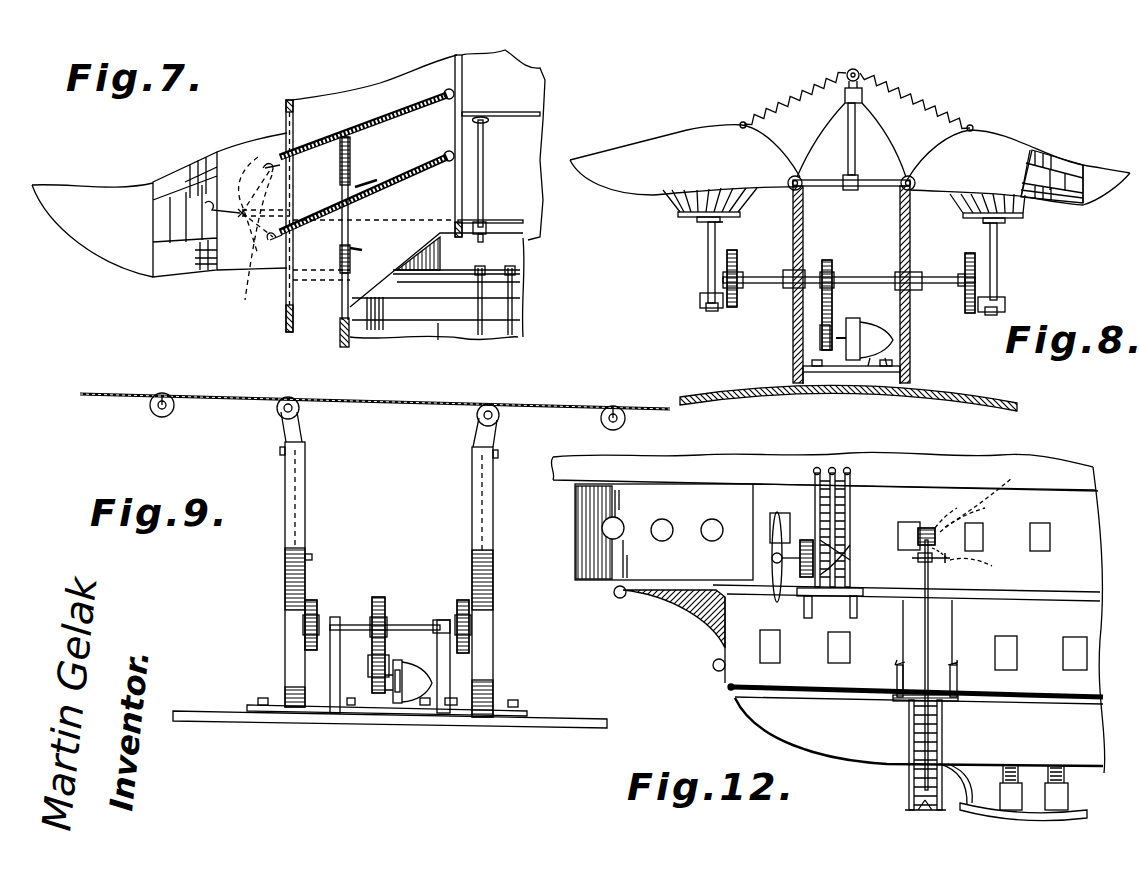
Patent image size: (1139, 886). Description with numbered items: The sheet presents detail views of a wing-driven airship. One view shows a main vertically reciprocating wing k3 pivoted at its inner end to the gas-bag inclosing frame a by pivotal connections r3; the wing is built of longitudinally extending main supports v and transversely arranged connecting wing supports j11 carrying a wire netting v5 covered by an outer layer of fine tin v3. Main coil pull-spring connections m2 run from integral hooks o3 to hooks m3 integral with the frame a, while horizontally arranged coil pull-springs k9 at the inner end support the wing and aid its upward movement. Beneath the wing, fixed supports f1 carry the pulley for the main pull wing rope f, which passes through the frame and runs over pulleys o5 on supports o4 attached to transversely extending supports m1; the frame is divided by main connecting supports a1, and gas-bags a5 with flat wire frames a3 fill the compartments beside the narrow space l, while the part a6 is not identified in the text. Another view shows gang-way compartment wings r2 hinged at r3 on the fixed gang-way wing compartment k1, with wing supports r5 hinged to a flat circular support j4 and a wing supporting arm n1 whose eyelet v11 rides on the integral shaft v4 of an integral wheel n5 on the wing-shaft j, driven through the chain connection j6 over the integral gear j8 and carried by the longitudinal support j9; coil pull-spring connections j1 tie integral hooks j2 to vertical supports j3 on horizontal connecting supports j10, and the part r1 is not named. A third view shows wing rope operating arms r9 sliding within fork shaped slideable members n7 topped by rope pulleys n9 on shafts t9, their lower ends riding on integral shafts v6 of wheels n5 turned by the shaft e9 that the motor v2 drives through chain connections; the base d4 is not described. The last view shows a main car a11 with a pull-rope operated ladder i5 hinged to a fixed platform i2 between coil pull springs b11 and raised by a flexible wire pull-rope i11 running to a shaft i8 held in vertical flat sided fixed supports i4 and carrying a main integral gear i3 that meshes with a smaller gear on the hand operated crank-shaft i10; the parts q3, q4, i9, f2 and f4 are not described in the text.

In FIG. 7, the main vertically reciprocating wing k3 is at (76, 192).
In FIG. 7, the outer layer of fine tin v3 is at (92, 231).
In FIG. 8, the outer layer of fine tin v3 is at (592, 165).
In FIG. 7, the longitudinally extending main support v is at (163, 182).
In FIG. 8, the longitudinally extending main support v is at (1060, 160).
In FIG. 7, the wire netting v5 is at (196, 170).
In FIG. 8, the wire netting v5 is at (1043, 150).
In FIG. 7, the transversely arranged connecting wing support j11 is at (176, 275).
In FIG. 7, the fixed support f1 is at (263, 225).
In FIG. 7, the integral hook o3 is at (266, 160).
In FIG. 7, the gas-bag inclosing frame a is at (312, 332).
In FIG. 8, the gas-bag inclosing frame a is at (997, 400).
In FIG. 12, the gas-bag inclosing frame a is at (828, 612).
In FIG. 7, the hook m3 is at (456, 98).
In FIG. 7, the main coil pull-spring connection m2 is at (420, 157).
In FIG. 7, the horizontally arranged coil pull-spring k9 is at (352, 165).
In FIG. 7, the frame edge a6 is at (390, 90).
In FIG. 7, the gas-bag a5 is at (530, 78).
In FIG. 7, the transversely extending support m1 is at (541, 114).
In FIG. 7, the pulley support o4 is at (485, 160).
In FIG. 9, the pulley support o4 is at (162, 417).
In FIG. 7, the pulley o5 is at (488, 234).
In FIG. 9, the pulley o5 is at (162, 395).
In FIG. 7, the pivotal connection r3 is at (360, 208).
In FIG. 8, the pivotal connection r3 is at (800, 175).
In FIG. 7, the narrow space l is at (528, 252).
In FIG. 7, the main connecting support a1 is at (428, 280).
In FIG. 7, the flat wire frame a3 is at (516, 306).
In FIG. 8, the gang-way compartment wing r2 is at (648, 157).
In FIG. 8, the right wing r1 is at (1113, 170).
In FIG. 8, the vertical support j3 is at (860, 75).
In FIG. 8, the coil pull-spring connection j1 is at (772, 104).
In FIG. 8, the integral hook j2 is at (740, 120).
In FIG. 8, the horizontal connecting support j10 is at (826, 190).
In FIG. 8, the fixed gang-way wing compartment k1 is at (792, 353).
In FIG. 8, the wing support r5 is at (672, 200).
In FIG. 8, the flat circular support j4 is at (1030, 217).
In FIG. 8, the wing supporting arm n1 is at (708, 240).
In FIG. 8, the integral wheel n5 is at (733, 308).
In FIG. 9, the integral wheel n5 is at (307, 647).
In FIG. 8, the wing-shaft j is at (760, 277).
In FIG. 8, the integral shaft v4 is at (700, 299).
In FIG. 8, the eyelet v11 is at (706, 308).
In FIG. 8, the chain connection j6 is at (832, 266).
In FIG. 9, the chain connection j6 is at (370, 667).
In FIG. 8, the integral gear j8 is at (832, 300).
In FIG. 9, the integral gear j8 is at (375, 617).
In FIG. 8, the longitudinal support j9 is at (860, 322).
In FIG. 9, the main pull wing rope f is at (217, 403).
In FIG. 9, the rope pulley n9 is at (298, 402).
In FIG. 9, the pulley shaft t9 is at (280, 412).
In FIG. 9, the fork shaped slideable member n7 is at (286, 485).
In FIG. 9, the wing rope operating arm r9 is at (298, 503).
In FIG. 9, the integral shaft v6 is at (290, 558).
In FIG. 9, the shaft e9 is at (407, 623).
In FIG. 9, the motor v2 is at (395, 703).
In FIG. 9, the base plate d4 is at (337, 717).
In FIG. 12, the cabin q3 is at (578, 530).
In FIG. 12, the main car a11 is at (778, 740).
In FIG. 12, the pull-rope operated ladder i5 is at (925, 632).
In FIG. 12, the shaft i8 is at (918, 522).
In FIG. 12, the flexible wire pull-rope i11 is at (900, 777).
In FIG. 12, the link i9 is at (967, 511).
In FIG. 12, the main integral gear i3 is at (983, 492).
In FIG. 12, the wheel q4 is at (918, 562).
In FIG. 12, the vertical flat sided fixed support i4 is at (943, 563).
In FIG. 12, the hand operated crank-shaft i10 is at (981, 565).
In FIG. 12, the coil pull spring b11 is at (953, 665).
In FIG. 12, the fixed platform i2 is at (955, 694).
In FIG. 12, the spring block f2 is at (1008, 790).
In FIG. 12, the spring block f4 is at (1048, 776).